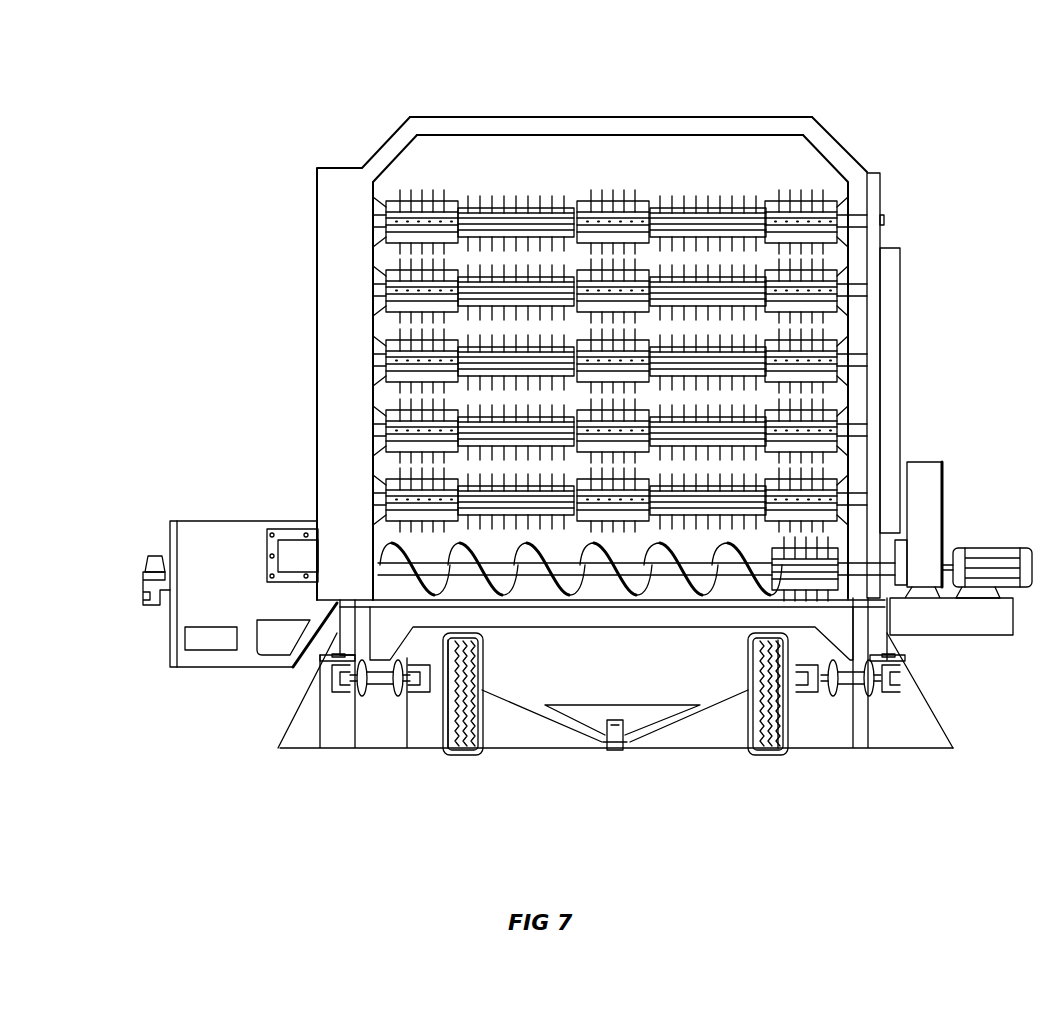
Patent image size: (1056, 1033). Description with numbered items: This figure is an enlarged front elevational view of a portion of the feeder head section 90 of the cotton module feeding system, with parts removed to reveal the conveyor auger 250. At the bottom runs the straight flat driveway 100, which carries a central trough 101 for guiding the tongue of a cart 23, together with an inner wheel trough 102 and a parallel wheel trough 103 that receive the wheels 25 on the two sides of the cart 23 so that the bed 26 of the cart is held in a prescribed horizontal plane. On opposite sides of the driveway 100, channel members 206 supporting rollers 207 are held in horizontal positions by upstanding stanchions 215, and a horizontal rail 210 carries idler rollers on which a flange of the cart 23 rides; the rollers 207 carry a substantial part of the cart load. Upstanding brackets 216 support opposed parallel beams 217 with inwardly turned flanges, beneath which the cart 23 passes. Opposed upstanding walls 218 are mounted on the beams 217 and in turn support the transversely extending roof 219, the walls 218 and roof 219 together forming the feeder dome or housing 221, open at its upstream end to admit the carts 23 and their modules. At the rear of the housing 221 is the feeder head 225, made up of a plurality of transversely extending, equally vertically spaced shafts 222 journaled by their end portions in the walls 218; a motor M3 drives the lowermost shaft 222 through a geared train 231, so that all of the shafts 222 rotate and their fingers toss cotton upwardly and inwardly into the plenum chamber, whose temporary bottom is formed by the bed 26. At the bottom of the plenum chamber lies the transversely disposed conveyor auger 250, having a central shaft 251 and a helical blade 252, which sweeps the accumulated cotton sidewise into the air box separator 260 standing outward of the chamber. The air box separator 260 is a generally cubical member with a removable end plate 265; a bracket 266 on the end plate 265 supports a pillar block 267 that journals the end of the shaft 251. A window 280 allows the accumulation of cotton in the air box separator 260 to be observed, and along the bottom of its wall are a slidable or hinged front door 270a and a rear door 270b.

The feeder head section 90 is at (350, 162).
The roof 219 is at (606, 122).
The housing 221 is at (828, 152).
The shaft 222 is at (860, 214).
The feeder head 225 is at (615, 305).
The upstanding wall 218 is at (878, 246).
The conveyor auger 250 is at (370, 572).
The central shaft 251 is at (422, 575).
The helical blade 252 is at (522, 556).
The bed 26 is at (664, 622).
The cart 23 is at (595, 620).
The stanchion 215 is at (332, 745).
The beam 217 is at (335, 612).
The bracket 216 is at (320, 670).
The channel member 206 is at (338, 680).
The horizontal rail 210 is at (420, 678).
The roller 207 is at (378, 700).
The wheel trough 103 is at (460, 755).
The inner wheel trough 102 is at (768, 755).
The wheel 25 is at (472, 730).
The driveway 100 is at (560, 750).
The central trough 101 is at (620, 752).
The air box separator 260 is at (204, 518).
The end plate 265 is at (177, 572).
The window 280 is at (295, 540).
The pillar block 267 is at (148, 562).
The bracket 266 is at (143, 598).
The front door 270a is at (190, 640).
The rear door 270b is at (268, 650).
The geared train 231 is at (928, 505).
The motor M3 is at (1002, 548).